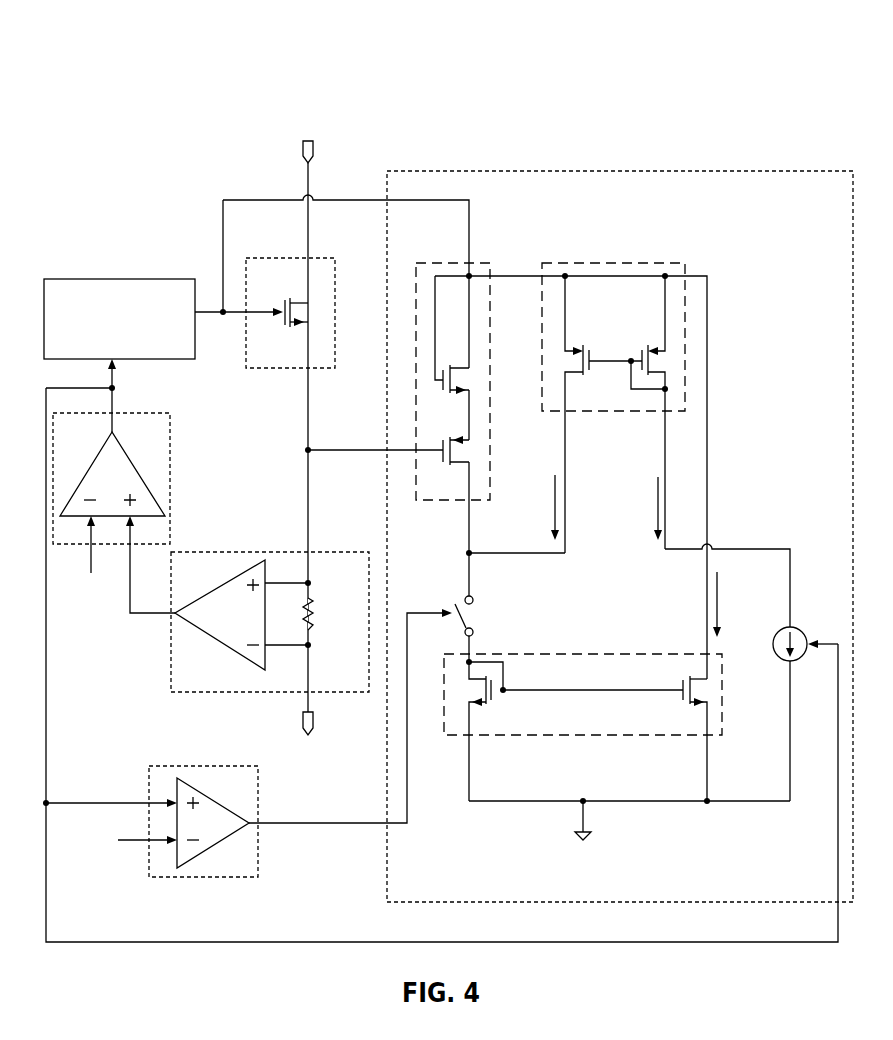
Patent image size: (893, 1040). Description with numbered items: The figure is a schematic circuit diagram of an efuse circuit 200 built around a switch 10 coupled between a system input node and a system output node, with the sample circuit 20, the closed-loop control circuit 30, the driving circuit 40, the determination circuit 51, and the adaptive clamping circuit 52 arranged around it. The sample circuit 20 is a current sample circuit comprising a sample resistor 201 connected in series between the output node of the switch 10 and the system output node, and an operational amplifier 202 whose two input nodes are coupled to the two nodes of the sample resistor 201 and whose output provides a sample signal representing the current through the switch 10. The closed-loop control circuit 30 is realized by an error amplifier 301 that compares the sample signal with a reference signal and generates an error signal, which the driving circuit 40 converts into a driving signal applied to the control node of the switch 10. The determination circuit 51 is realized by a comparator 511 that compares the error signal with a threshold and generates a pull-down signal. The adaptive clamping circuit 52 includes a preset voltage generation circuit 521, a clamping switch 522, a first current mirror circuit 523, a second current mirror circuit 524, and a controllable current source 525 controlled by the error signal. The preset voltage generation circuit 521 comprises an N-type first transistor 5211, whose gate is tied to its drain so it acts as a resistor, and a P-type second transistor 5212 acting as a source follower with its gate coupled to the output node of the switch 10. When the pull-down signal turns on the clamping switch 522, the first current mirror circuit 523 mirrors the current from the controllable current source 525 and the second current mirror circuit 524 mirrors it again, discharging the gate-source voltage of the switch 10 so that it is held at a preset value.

The efuse circuit 200 is at (722, 82).
The switch 10 is at (335, 293).
The sample circuit 20 is at (247, 552).
The sample resistor 201 is at (328, 608).
The operational amplifier 202 is at (228, 644).
The closed-loop control circuit 30 is at (170, 458).
The error amplifier 301 is at (78, 484).
The driving circuit 40 is at (163, 319).
The determination circuit 51 is at (258, 870).
The comparator 511 is at (235, 797).
The adaptive clamping circuit 52 is at (513, 171).
The preset voltage generation circuit 521 is at (445, 263).
The first transistor 5211 is at (438, 388).
The second transistor 5212 is at (439, 463).
The clamping switch 522 is at (480, 624).
The first current mirror circuit 523 is at (630, 263).
The second current mirror circuit 524 is at (635, 654).
The controllable current source 525 is at (800, 630).